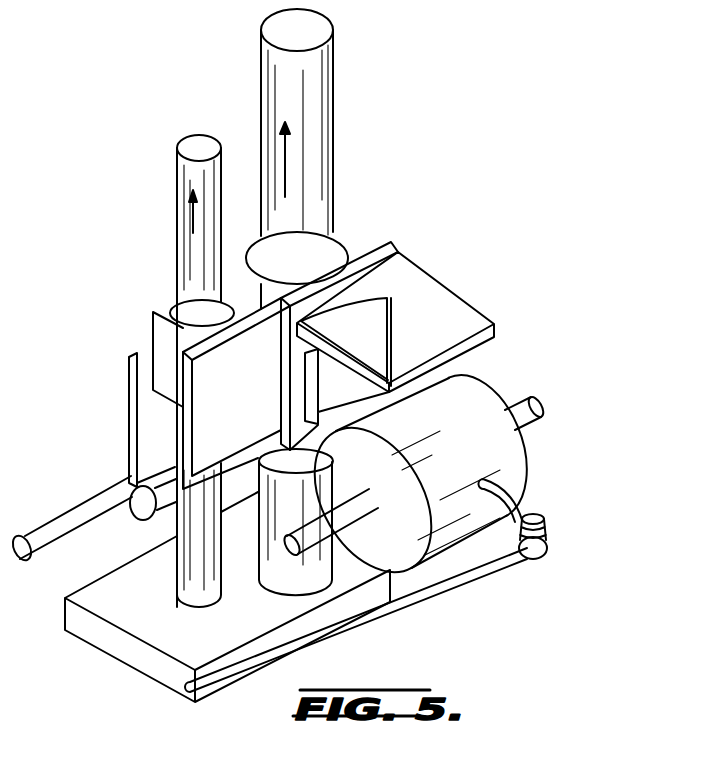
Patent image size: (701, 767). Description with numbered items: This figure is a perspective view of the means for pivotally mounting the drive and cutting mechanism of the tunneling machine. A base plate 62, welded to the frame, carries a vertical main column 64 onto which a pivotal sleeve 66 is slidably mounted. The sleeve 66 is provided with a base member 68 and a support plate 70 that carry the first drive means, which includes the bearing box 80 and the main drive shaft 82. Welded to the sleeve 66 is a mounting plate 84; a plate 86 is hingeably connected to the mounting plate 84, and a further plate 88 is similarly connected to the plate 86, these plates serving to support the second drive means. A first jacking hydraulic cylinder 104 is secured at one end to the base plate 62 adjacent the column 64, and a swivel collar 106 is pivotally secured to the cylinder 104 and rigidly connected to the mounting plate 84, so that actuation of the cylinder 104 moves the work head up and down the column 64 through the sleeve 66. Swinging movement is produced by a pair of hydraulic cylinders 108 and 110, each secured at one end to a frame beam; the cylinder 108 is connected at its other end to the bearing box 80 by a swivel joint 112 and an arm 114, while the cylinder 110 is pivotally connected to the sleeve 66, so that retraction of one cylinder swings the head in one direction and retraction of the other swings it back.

The base plate 62 is at (127, 652).
The main column 64 is at (333, 113).
The pivotal sleeve 66 is at (337, 240).
The base member 68 is at (142, 518).
The support plate 70 is at (129, 389).
The bearing box 80 is at (473, 389).
The main drive shaft 82 is at (527, 406).
The mounting plate 84 is at (392, 246).
The plate 86 is at (433, 283).
The further plate 88 is at (391, 340).
The hydraulic cylinder 104 is at (218, 193).
The swivel collar 106 is at (153, 300).
The hydraulic cylinder 108 is at (432, 590).
The hydraulic cylinder 110 is at (75, 500).
The swivel joint 112 is at (548, 541).
The arm 114 is at (526, 500).